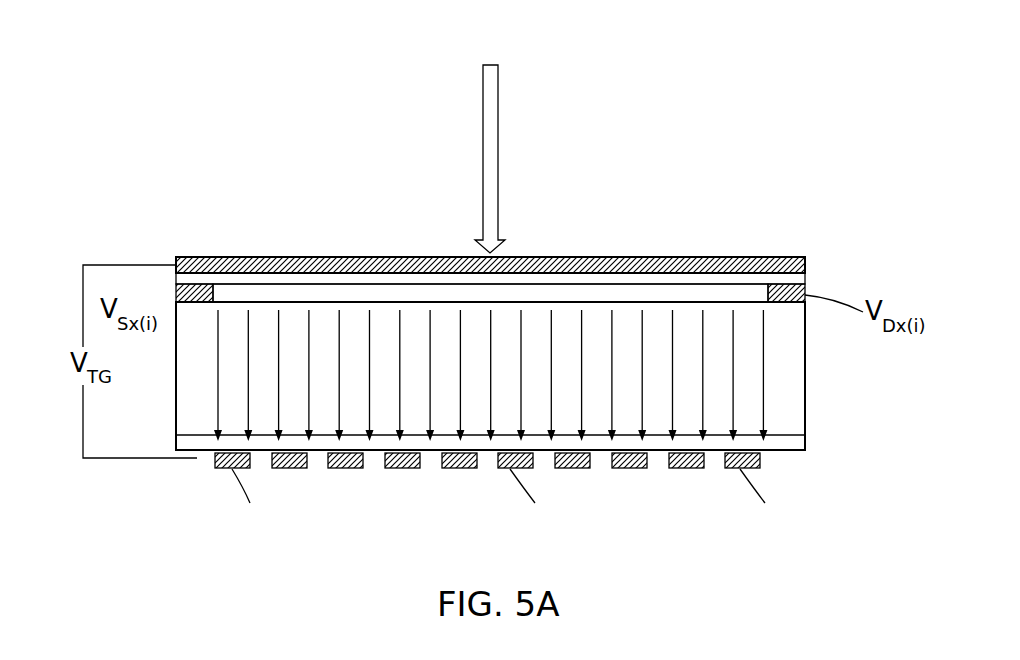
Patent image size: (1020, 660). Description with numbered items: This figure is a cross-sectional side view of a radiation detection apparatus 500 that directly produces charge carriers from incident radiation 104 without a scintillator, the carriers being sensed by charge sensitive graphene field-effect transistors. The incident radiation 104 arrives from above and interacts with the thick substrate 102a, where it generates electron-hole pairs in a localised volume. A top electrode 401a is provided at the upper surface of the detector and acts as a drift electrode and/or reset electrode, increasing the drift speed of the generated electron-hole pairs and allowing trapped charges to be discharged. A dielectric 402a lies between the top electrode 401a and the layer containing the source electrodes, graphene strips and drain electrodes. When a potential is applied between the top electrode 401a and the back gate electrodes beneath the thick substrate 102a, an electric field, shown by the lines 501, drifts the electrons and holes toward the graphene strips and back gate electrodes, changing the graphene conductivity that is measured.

The incident radiation 104 is at (498, 112).
The apparatus 500 is at (691, 133).
The top electrode 401a is at (753, 256).
The dielectric 402a is at (770, 278).
The thick substrate 102a is at (787, 377).
The lines 501 is at (763, 407).